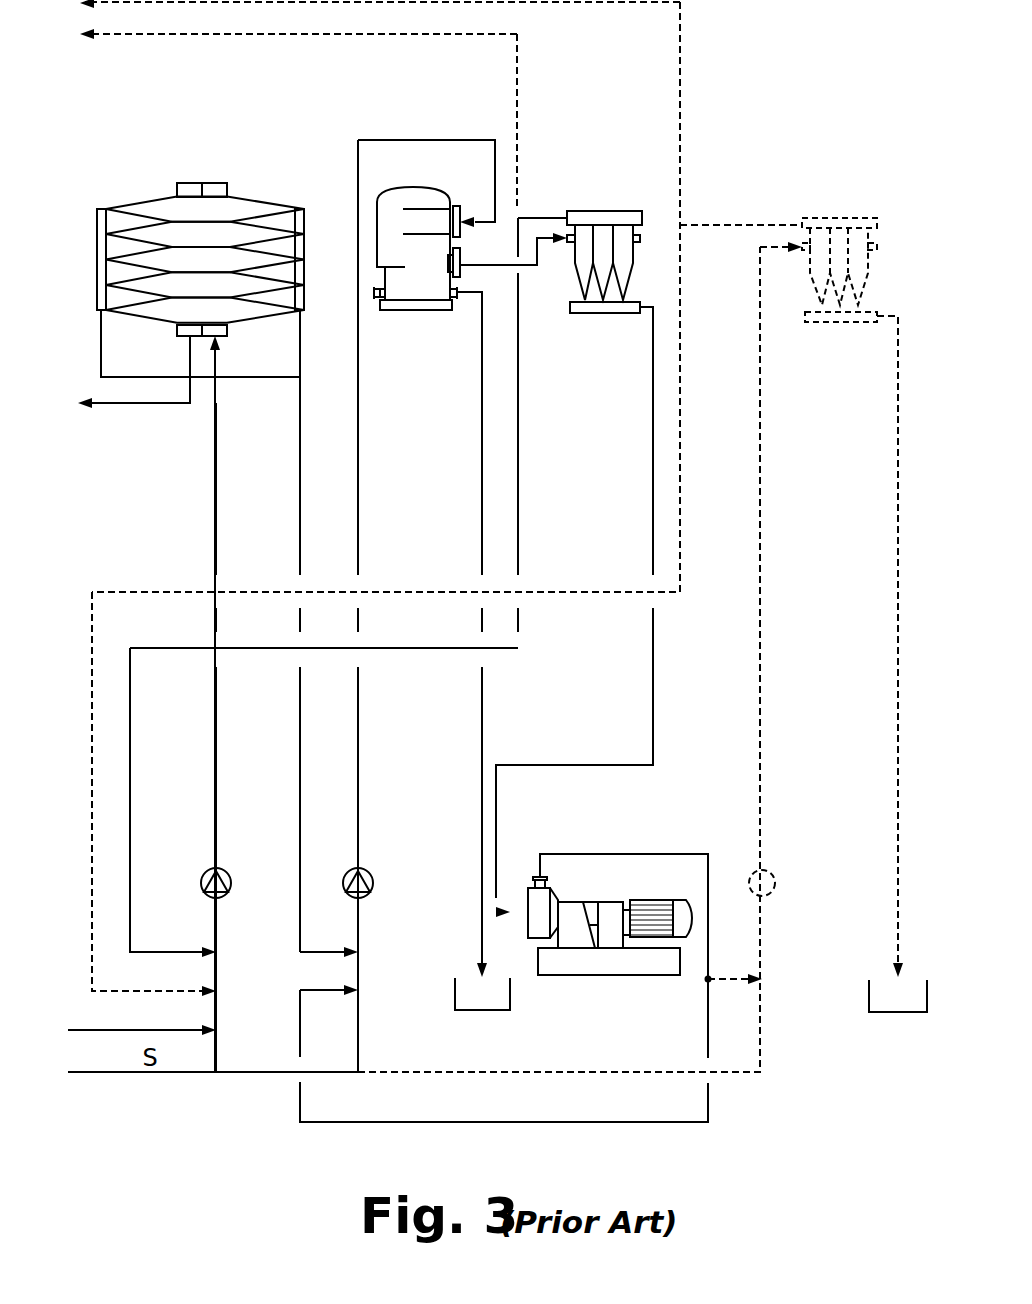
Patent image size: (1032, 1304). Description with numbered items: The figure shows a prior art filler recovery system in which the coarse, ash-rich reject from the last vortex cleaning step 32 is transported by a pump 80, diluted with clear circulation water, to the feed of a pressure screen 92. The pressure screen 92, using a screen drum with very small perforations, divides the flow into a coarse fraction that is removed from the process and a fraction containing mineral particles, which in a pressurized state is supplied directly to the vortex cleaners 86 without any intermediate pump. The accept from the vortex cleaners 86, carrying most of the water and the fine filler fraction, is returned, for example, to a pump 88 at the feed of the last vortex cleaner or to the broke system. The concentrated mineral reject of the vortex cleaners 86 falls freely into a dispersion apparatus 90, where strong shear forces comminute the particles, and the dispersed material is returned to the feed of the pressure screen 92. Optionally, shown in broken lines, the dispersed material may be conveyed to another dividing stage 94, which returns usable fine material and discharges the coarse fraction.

The last vortex cleaning step 32 is at (178, 213).
The vortex cleaners 86 is at (603, 237).
The pressure screen 92 is at (410, 288).
The another dividing stage 94 is at (840, 245).
The pump 88 is at (201, 885).
The pump 80 is at (373, 890).
The dispersion apparatus 90 is at (612, 915).